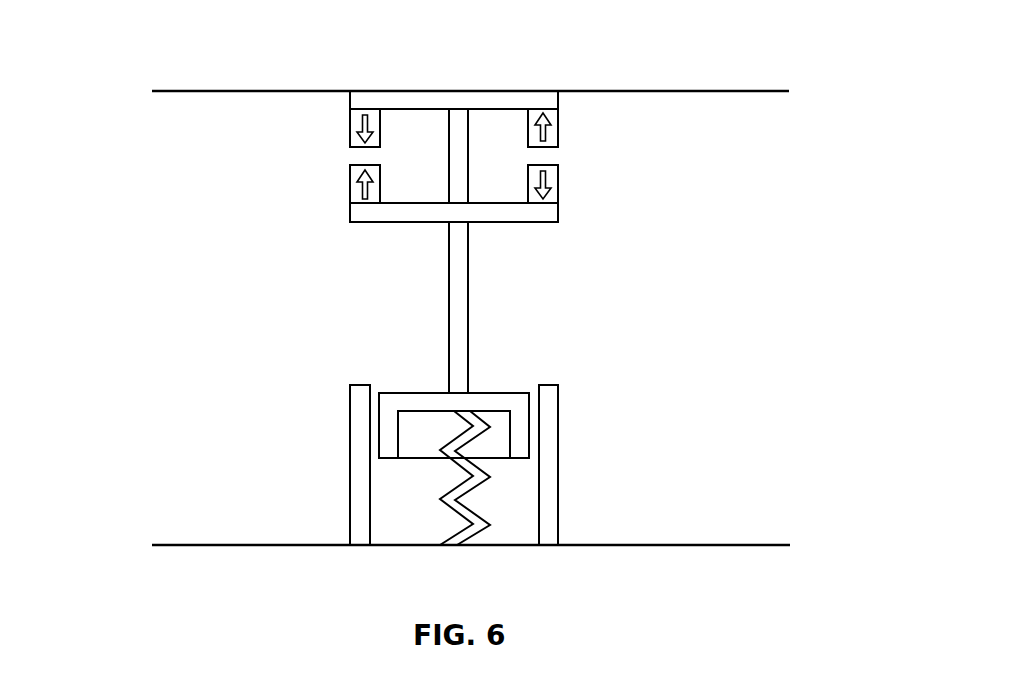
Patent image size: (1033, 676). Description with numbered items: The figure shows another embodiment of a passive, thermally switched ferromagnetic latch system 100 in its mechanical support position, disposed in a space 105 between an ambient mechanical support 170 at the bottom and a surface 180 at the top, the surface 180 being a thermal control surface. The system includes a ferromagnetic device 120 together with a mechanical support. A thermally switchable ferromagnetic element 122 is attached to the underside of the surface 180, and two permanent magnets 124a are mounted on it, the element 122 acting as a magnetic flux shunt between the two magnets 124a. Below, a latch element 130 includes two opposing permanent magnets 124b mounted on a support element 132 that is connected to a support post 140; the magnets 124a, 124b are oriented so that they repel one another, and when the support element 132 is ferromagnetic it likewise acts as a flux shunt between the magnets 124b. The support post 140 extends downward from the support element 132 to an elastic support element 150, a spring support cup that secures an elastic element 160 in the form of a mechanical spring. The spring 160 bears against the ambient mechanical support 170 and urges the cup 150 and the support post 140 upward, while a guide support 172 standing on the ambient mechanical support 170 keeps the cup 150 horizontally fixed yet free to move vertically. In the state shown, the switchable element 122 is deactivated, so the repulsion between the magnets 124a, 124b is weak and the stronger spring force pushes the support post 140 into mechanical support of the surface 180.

The latch system 100 is at (136, 30).
The space 105 is at (744, 330).
The ferromagnetic device 120 is at (762, 168).
The thermally switchable ferromagnetic element 122 is at (559, 100).
The permanent magnets 124a is at (350, 128).
The opposing permanent magnets 124b is at (350, 182).
The latch element 130 is at (417, 224).
The support element 132 is at (505, 213).
The support post 140 is at (469, 313).
The elastic support element 150 is at (508, 390).
The elastic element 160 is at (447, 505).
The ambient mechanical support 170 is at (703, 548).
The guide support 172 is at (559, 473).
The surface 180 is at (304, 89).